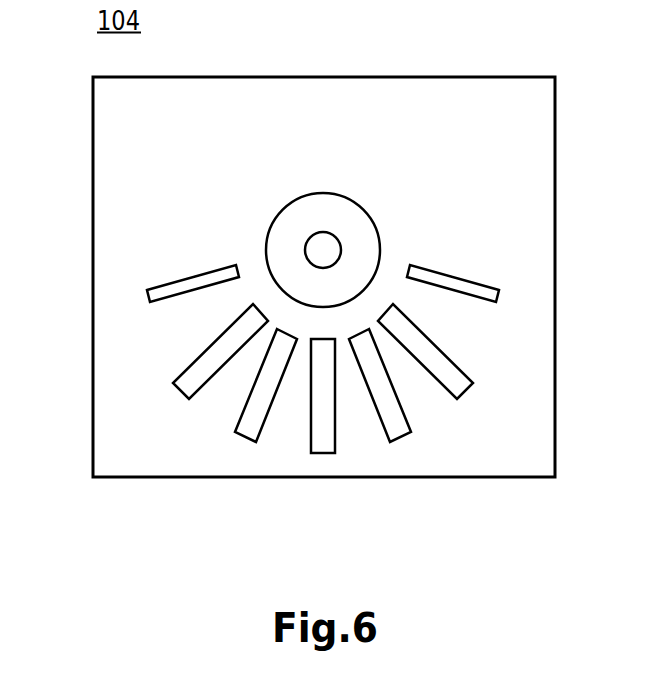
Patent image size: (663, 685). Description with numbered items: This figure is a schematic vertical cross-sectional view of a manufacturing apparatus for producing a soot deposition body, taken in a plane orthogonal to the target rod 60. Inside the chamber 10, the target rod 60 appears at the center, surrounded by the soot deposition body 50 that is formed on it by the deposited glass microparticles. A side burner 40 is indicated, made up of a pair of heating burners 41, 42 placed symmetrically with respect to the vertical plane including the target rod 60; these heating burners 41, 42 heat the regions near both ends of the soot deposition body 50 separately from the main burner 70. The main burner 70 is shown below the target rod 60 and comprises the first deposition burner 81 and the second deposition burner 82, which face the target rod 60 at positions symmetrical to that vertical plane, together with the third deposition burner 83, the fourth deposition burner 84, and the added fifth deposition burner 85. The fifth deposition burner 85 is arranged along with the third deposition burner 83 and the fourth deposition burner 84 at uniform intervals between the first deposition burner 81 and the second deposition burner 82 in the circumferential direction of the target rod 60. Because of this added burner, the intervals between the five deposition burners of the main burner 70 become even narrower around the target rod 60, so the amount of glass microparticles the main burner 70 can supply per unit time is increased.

The chamber 10 is at (320, 76).
The side burner 40 is at (118, 294).
The heating burner 41 is at (197, 273).
The heating burner 42 is at (452, 274).
The soot deposition body 50 is at (350, 194).
The target rod 60 is at (313, 235).
The main burner 70 is at (118, 393).
The first deposition burner 81 is at (195, 358).
The second deposition burner 82 is at (451, 358).
The third deposition burner 83 is at (236, 428).
The fourth deposition burner 84 is at (410, 427).
The fifth deposition burner 85 is at (335, 432).